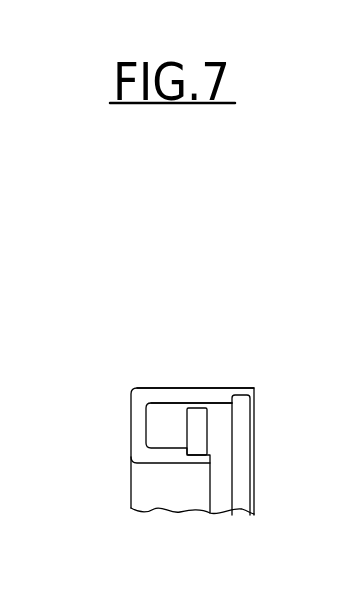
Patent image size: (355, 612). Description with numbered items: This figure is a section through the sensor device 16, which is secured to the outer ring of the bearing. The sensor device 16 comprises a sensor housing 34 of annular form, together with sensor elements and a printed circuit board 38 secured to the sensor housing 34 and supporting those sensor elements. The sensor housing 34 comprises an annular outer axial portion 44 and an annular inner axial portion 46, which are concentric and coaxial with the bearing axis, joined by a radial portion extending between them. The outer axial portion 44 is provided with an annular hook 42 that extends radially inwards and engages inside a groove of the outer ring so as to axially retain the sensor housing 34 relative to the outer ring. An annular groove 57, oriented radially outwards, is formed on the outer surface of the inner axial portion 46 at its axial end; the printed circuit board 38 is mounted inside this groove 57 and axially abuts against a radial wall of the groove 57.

The sensor device 16 is at (127, 408).
The sensor housing 34 is at (132, 388).
The annular outer axial portion 44 is at (192, 392).
The annular hook 42 is at (257, 404).
The printed circuit board 38 is at (203, 433).
The annular groove 57 is at (192, 450).
The annular inner axial portion 46 is at (169, 459).